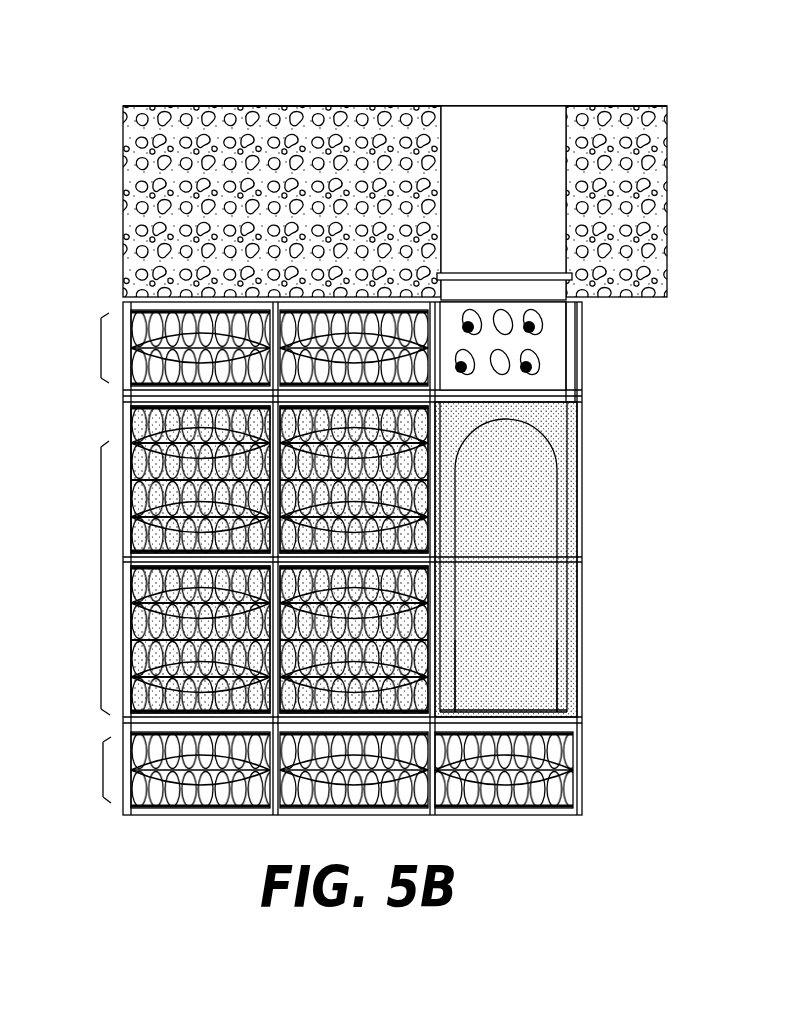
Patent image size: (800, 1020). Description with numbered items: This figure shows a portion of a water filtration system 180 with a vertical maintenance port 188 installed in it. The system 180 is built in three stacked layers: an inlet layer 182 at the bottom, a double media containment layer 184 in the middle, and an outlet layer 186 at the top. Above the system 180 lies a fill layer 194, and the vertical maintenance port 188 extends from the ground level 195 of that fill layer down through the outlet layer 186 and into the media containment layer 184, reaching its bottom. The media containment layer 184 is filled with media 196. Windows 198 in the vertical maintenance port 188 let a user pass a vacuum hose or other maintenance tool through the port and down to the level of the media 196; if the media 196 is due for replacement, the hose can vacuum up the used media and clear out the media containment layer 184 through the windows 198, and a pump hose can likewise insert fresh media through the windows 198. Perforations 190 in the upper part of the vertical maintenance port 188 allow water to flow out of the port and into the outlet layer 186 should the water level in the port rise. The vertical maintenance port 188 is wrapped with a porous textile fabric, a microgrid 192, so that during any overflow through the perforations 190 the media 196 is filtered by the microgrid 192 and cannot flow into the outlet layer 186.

The water filtration system 180 is at (672, 580).
The inlet layer 182 is at (103, 772).
The double media containment layer 184 is at (101, 561).
The outlet layer 186 is at (101, 348).
The vertical maintenance port 188 is at (512, 135).
The perforations 190 is at (500, 314).
The microgrid 192 is at (571, 386).
The fill layer 194 is at (262, 138).
The ground level 195 is at (372, 107).
The media 196 is at (540, 490).
The windows 198 is at (558, 652).